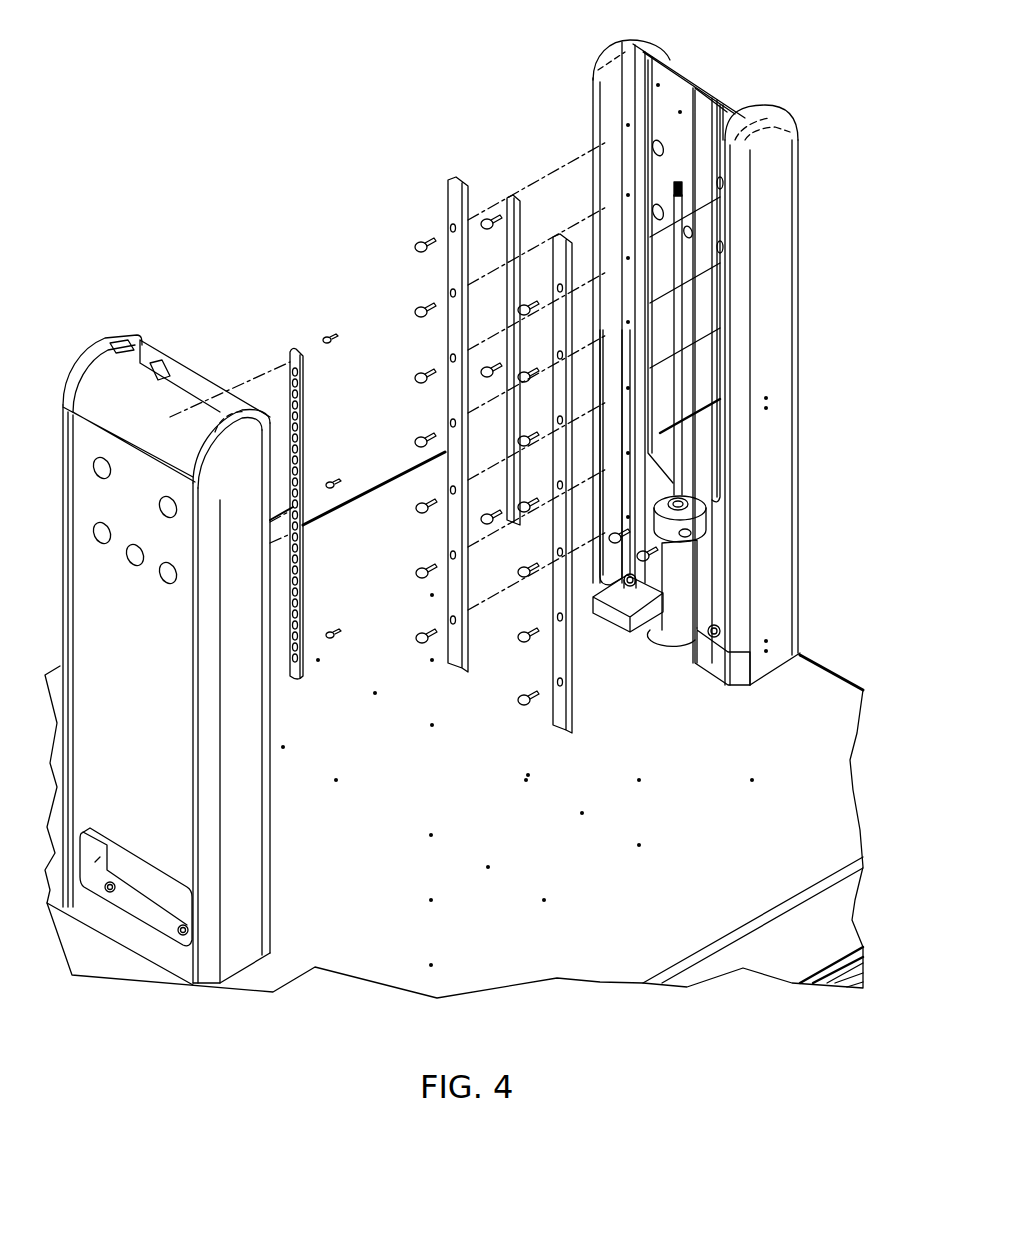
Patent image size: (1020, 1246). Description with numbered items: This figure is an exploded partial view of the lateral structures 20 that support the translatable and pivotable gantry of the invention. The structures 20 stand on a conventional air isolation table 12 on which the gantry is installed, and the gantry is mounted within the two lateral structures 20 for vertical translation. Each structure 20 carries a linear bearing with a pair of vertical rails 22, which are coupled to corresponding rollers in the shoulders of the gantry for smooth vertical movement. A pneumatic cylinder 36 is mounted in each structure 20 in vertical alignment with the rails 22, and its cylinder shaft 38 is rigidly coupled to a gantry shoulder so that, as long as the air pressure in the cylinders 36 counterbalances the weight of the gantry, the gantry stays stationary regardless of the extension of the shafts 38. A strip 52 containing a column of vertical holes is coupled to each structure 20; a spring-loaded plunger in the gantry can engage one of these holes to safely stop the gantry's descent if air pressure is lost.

The air isolation table 12 is at (818, 700).
The lateral structure 20 is at (188, 410).
The vertical rails 22 is at (455, 660).
The pneumatic cylinder 36 is at (660, 637).
The cylinder shaft 38 is at (677, 303).
The strip 52 is at (305, 403).